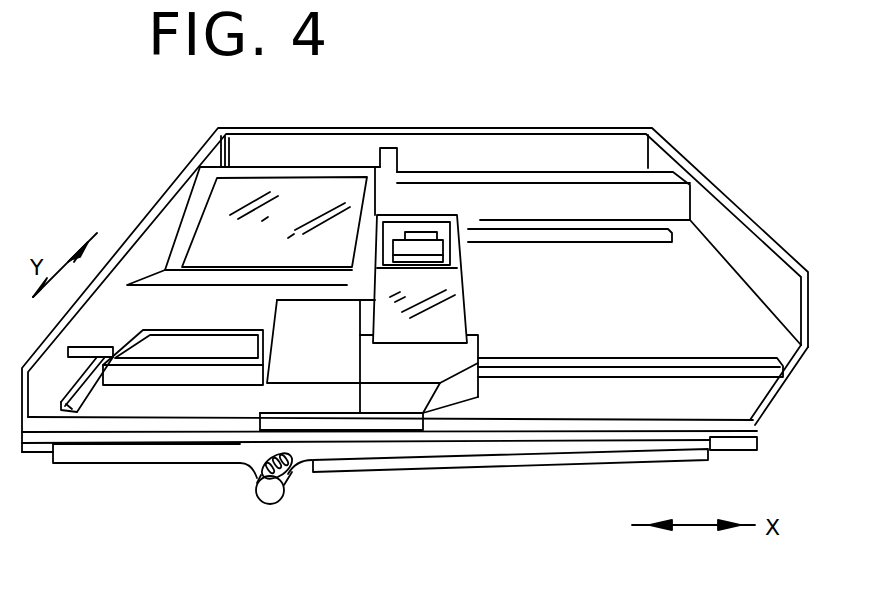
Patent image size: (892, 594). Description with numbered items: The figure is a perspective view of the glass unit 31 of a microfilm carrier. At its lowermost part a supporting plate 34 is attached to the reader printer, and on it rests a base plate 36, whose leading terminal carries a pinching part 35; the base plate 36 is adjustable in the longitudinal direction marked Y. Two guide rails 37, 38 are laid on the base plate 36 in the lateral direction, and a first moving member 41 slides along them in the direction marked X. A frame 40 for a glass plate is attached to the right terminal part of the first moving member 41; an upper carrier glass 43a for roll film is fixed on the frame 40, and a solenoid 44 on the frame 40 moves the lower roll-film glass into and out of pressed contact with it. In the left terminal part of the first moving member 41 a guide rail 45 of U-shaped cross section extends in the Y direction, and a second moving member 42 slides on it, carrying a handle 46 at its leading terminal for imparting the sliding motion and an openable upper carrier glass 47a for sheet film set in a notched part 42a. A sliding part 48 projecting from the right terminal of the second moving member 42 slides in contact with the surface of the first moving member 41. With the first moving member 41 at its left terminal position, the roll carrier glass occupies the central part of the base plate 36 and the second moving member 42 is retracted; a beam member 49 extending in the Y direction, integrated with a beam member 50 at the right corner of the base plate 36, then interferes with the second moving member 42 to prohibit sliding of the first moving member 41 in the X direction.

The glass unit 31 is at (568, 121).
The supporting plate 34 is at (410, 472).
The pinching part 35 is at (270, 492).
The base plate 36 is at (767, 337).
The guide rail 37 is at (642, 360).
The guide rail 38 is at (613, 232).
The frame 40 is at (440, 363).
The first moving member 41 is at (124, 410).
The second moving member 42 is at (154, 310).
The opening 42a is at (278, 335).
The upper carrier glass 43a is at (447, 308).
The solenoid 44 is at (427, 240).
The guide rail 45 is at (62, 412).
The handle 46 is at (198, 362).
The upper carrier glass for sheet 47a is at (295, 185).
The sliding part 48 is at (343, 337).
The beam member 49 is at (390, 150).
The beam member 50 is at (527, 172).